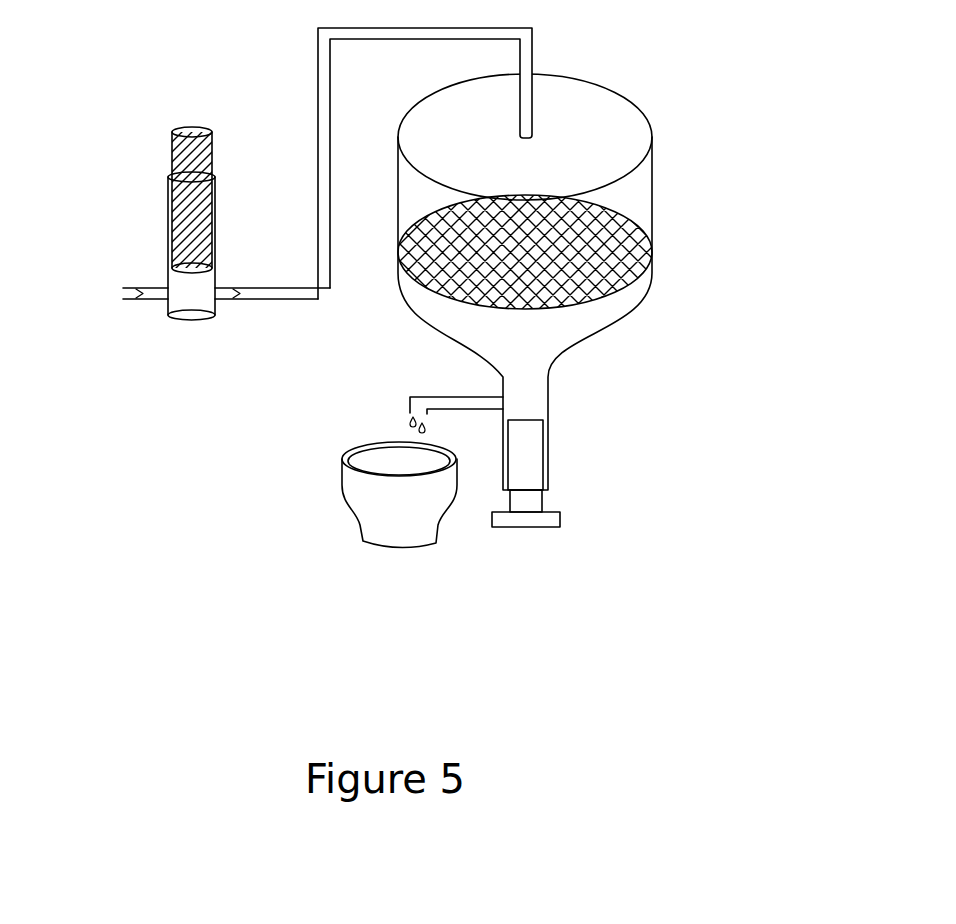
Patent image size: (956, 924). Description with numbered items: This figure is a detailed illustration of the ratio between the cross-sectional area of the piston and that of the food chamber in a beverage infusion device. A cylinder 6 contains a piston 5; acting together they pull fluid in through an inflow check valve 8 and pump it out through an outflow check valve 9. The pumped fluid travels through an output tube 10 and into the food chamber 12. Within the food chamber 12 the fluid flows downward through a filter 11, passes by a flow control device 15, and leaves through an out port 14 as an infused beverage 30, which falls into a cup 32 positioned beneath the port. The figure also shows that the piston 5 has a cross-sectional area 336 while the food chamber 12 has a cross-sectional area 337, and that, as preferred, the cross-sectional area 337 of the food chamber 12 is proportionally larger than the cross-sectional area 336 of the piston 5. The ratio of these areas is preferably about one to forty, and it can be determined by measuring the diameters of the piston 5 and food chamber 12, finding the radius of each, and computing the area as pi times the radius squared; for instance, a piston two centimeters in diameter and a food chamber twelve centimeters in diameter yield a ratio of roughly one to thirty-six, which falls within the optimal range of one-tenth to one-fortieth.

The piston 5 is at (173, 156).
The cross-sectional area 336 is at (183, 268).
The cylinder 6 is at (172, 308).
The inflow check valve 8 is at (138, 290).
The outflow check valve 9 is at (238, 300).
The output tube 10 is at (322, 55).
The cross-sectional area 337 is at (562, 108).
The food chamber 12 is at (642, 187).
The filter 11 is at (612, 263).
The out port 14 is at (453, 400).
The flow control device 15 is at (532, 450).
The infused beverage 30 is at (410, 430).
The cup 32 is at (372, 530).